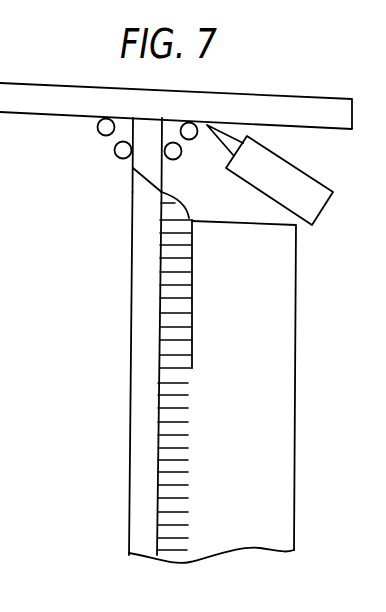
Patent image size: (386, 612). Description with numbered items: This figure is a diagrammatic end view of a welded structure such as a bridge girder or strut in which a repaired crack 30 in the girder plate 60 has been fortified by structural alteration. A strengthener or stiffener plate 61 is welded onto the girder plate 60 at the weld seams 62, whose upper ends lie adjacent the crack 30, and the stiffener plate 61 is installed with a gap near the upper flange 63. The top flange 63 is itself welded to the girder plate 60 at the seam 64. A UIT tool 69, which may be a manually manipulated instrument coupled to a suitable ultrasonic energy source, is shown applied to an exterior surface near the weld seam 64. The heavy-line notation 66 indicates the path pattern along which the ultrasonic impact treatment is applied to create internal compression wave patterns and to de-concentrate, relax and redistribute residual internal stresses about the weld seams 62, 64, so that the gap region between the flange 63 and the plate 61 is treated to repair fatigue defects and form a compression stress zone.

The repaired crack 30 is at (130, 172).
The girder plate 60 is at (129, 445).
The stiffener plate 61 is at (263, 486).
The weld seams 62 is at (168, 538).
The upper flange 63 is at (76, 99).
The weld seam 64 is at (173, 124).
The path pattern 66 is at (192, 325).
The UIT tool 69 is at (305, 188).